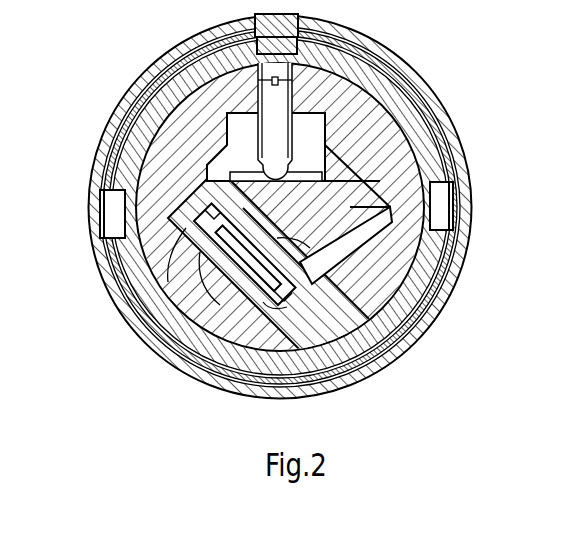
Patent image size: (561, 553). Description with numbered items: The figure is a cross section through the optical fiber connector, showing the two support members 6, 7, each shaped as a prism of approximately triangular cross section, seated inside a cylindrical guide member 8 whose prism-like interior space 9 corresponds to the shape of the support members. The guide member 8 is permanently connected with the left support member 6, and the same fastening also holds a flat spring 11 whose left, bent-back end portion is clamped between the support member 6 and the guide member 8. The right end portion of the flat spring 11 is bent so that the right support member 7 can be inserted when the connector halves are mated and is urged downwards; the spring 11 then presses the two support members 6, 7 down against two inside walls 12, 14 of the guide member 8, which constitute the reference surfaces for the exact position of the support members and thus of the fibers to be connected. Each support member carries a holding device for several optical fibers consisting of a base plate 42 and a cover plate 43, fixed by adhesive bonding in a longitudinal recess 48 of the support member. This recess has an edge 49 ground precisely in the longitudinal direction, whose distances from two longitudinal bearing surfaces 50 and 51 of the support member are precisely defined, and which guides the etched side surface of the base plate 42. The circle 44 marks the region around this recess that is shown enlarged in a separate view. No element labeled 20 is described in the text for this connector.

The left support member 6 is at (425, 296).
The right support member 7 is at (432, 304).
The cylindrical guide member 8 is at (398, 250).
The prism-like interior space 9 is at (214, 168).
The flat spring 11 is at (345, 105).
The inside wall 12 is at (142, 318).
The inside wall 14 is at (400, 346).
The bearing strip 20 is at (424, 145).
The base plate 42 is at (198, 325).
The cover plate 43 is at (212, 335).
The circle 44 is at (226, 340).
The longitudinal recess 48 is at (200, 232).
The edge 49 is at (352, 352).
The longitudinal bearing surface 50 is at (258, 345).
The longitudinal bearing surface 51 is at (306, 335).